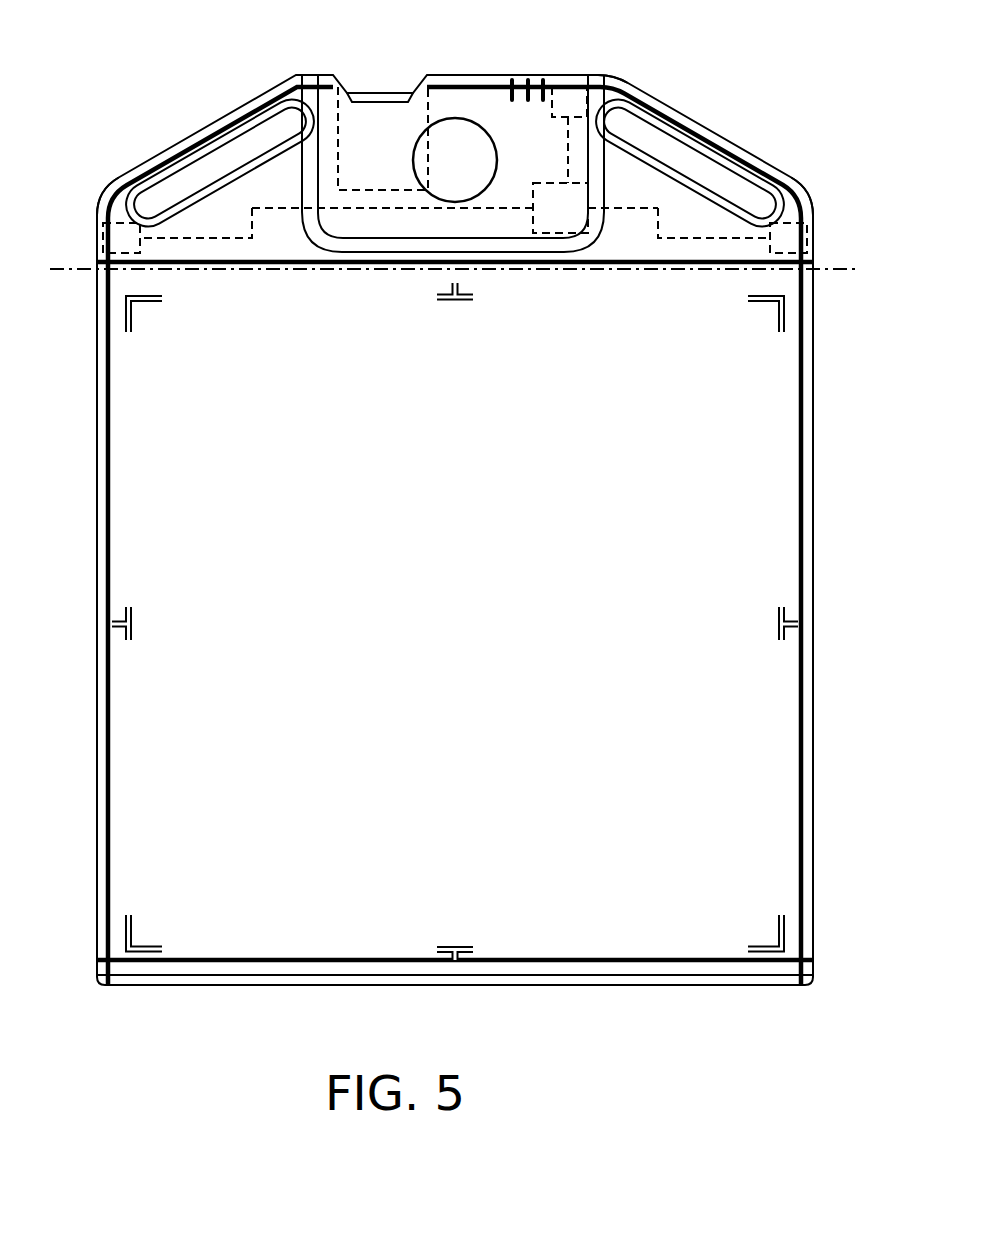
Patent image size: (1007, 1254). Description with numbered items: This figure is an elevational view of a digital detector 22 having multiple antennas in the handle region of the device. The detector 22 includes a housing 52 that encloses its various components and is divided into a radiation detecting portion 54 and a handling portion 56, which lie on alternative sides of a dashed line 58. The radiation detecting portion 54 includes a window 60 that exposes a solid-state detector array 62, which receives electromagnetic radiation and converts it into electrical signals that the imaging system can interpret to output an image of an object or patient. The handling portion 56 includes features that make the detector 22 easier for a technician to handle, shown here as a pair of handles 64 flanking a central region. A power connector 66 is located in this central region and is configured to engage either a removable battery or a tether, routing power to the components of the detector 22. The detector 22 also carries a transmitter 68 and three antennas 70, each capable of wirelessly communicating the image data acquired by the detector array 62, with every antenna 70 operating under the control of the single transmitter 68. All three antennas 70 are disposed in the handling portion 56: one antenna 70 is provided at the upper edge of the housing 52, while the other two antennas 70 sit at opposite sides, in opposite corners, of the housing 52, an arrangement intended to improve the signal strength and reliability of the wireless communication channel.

The digital detector 22 is at (106, 1012).
The housing 52 is at (697, 986).
The radiation detecting portion 54 is at (80, 297).
The handling portion 56 is at (80, 248).
The dashed line 58 is at (843, 268).
The window 60 is at (618, 962).
The solid-state detector array 62 is at (548, 878).
The handle 64 is at (183, 138).
The power connector 66 is at (432, 118).
The transmitter 68 is at (550, 180).
The antenna 70 is at (92, 232).